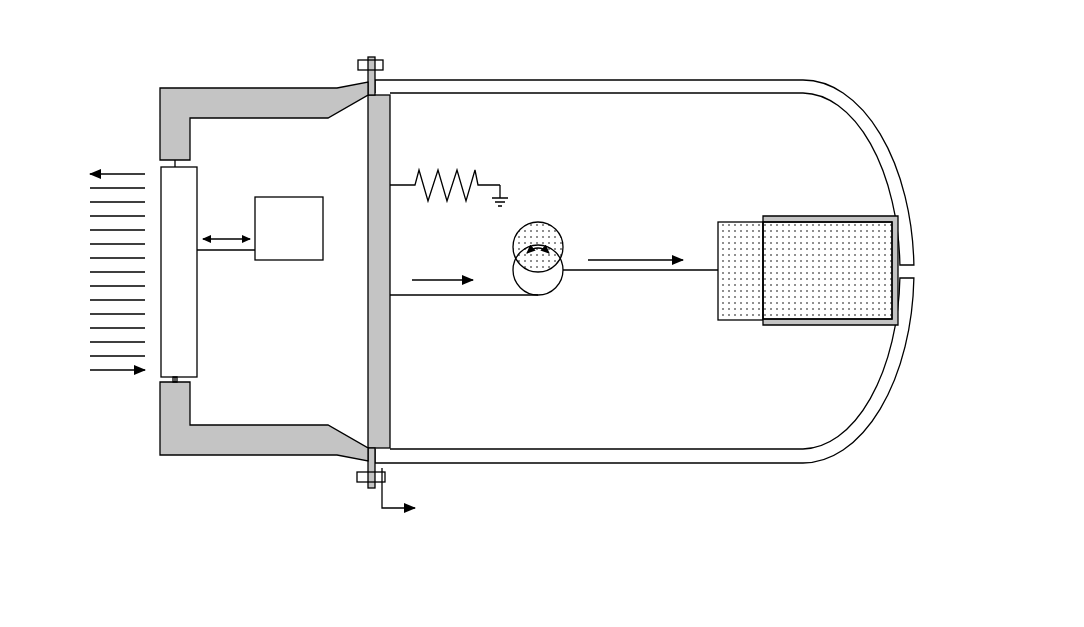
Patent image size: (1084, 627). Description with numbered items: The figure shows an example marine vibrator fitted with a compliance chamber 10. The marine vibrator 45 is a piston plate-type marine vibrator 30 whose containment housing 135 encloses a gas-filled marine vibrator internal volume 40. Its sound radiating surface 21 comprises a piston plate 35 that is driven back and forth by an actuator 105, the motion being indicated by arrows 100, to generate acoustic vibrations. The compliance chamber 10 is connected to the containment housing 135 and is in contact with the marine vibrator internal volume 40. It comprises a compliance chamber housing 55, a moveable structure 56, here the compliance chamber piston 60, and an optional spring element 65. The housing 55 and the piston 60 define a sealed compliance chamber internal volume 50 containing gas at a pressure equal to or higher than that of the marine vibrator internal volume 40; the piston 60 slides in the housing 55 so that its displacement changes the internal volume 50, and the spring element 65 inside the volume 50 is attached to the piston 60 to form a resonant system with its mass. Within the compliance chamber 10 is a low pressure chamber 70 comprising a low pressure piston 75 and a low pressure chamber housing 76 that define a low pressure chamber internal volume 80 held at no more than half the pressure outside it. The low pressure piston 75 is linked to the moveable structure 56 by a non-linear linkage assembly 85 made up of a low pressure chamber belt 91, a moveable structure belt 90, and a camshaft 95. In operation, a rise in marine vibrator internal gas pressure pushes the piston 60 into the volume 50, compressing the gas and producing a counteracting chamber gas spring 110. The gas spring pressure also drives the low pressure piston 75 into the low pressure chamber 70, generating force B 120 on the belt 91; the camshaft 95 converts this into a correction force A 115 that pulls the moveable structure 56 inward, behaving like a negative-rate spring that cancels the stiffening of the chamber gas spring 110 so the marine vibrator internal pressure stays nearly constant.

The compliance chamber 10 is at (788, 60).
The sound radiating surface 21 is at (177, 358).
The piston plate-type marine vibrator 30 is at (210, 103).
The piston plate 35 is at (177, 182).
The marine vibrator internal volume 40 is at (292, 400).
The marine vibrator 45 is at (148, 68).
The compliance chamber internal volume 50 is at (677, 140).
The compliance chamber housing 55 is at (450, 90).
The moveable structure 56 is at (380, 165).
The compliance chamber piston 60 is at (378, 112).
The spring element 65 is at (477, 173).
The low pressure chamber 70 is at (845, 202).
The low pressure piston 75 is at (740, 307).
The low pressure chamber housing 76 is at (867, 327).
The low pressure chamber internal volume 80 is at (858, 292).
The non-linear linkage assembly 85 is at (597, 227).
The moveable structure belt 90 is at (485, 297).
The low pressure chamber belt 91 is at (693, 272).
The camshaft 95 is at (538, 222).
The arrows 100 is at (85, 272).
The actuator 105 is at (290, 247).
The chamber gas spring 110 is at (807, 133).
The force A 115 is at (443, 278).
The force B 120 is at (642, 258).
The containment housing 135 is at (297, 103).